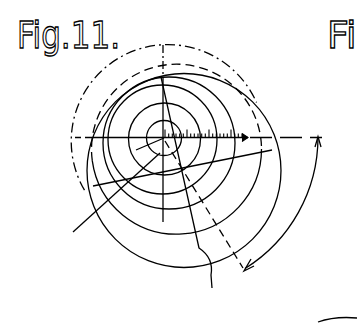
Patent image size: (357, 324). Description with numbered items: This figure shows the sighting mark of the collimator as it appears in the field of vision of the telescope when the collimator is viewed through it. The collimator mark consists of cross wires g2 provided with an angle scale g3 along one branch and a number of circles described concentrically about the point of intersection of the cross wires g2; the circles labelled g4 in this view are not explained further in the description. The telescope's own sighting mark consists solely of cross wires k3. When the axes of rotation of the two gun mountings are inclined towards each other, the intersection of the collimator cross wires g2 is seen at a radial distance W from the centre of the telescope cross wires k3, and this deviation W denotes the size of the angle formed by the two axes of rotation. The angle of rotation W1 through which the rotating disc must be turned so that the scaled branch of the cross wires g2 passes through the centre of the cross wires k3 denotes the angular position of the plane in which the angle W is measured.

The cross wires g2 is at (163, 60).
The angle scale g3 is at (228, 131).
The pitch circle of gear g4 is at (202, 88).
The cross wires k3 is at (152, 194).
The radial distance W is at (144, 156).
The angle of rotation W1 is at (306, 210).